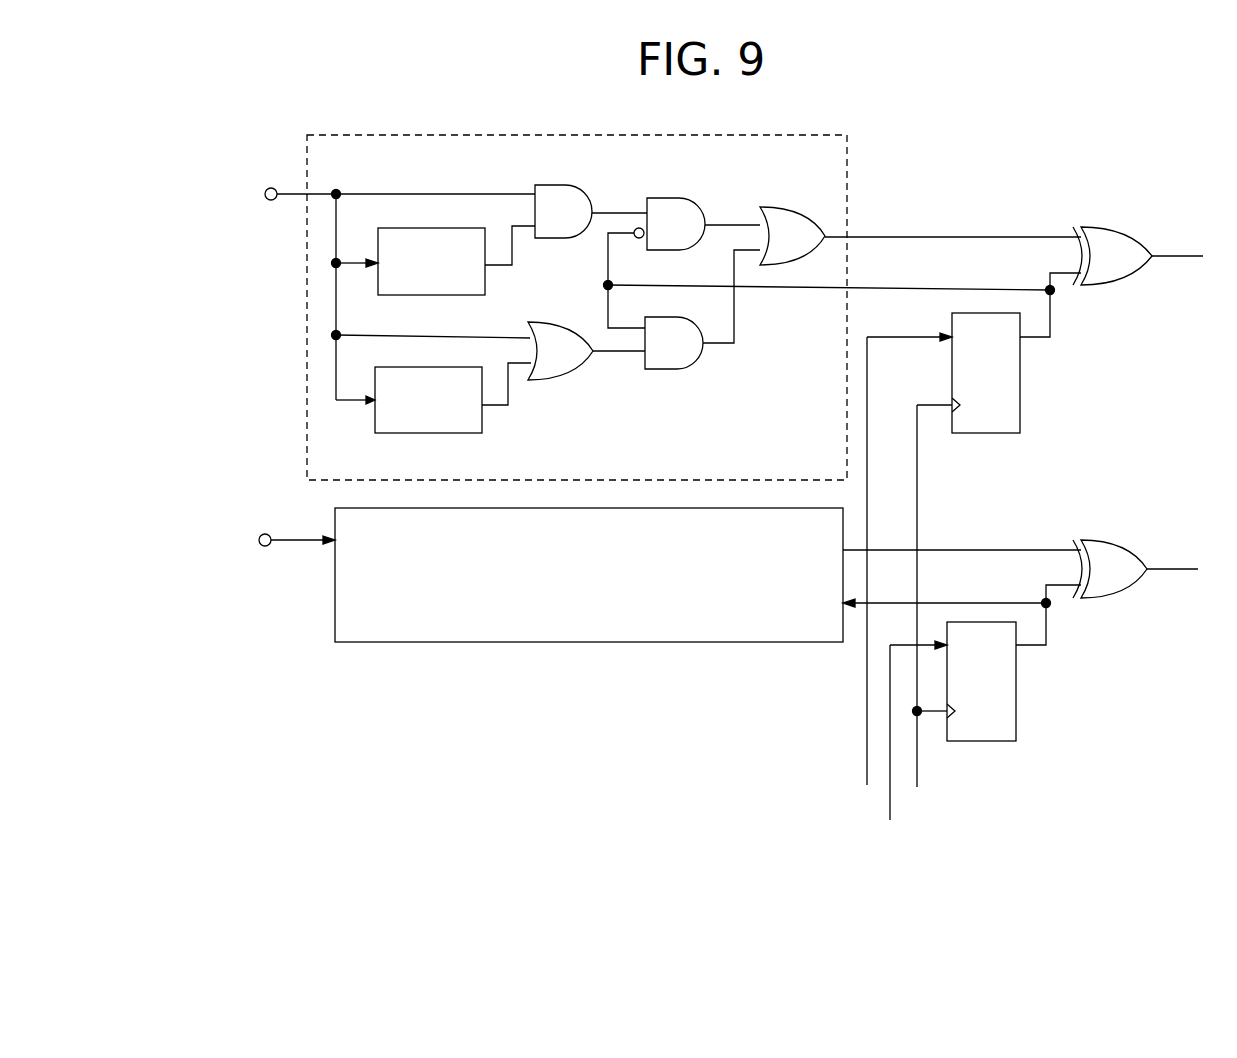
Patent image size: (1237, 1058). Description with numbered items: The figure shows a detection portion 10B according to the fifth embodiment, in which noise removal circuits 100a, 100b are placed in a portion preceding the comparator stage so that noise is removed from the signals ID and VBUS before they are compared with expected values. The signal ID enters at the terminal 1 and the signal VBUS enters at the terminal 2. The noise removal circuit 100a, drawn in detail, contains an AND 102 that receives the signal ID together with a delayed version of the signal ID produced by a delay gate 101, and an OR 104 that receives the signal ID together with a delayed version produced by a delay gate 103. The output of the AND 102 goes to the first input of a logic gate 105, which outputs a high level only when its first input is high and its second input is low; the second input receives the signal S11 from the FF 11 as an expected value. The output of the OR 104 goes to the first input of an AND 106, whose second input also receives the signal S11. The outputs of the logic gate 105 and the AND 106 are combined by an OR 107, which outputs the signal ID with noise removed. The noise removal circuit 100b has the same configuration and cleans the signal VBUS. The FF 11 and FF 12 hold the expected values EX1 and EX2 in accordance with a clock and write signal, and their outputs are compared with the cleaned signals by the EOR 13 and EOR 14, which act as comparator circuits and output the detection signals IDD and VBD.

The terminal 1 is at (273, 188).
The terminal 2 is at (265, 533).
The detection portion 10B is at (1108, 798).
The FF 11 is at (1020, 400).
The FF 12 is at (1016, 708).
The EOR 13 is at (1137, 227).
The EOR 14 is at (1133, 540).
The noise removal circuit 100a is at (847, 188).
The noise removal circuit 100b is at (410, 642).
The delay gate 101 is at (430, 295).
The AND 102 is at (558, 238).
The delay gate 103 is at (415, 433).
The OR 104 is at (556, 380).
The logic gate 105 is at (682, 197).
The AND 106 is at (690, 369).
The OR 107 is at (778, 206).